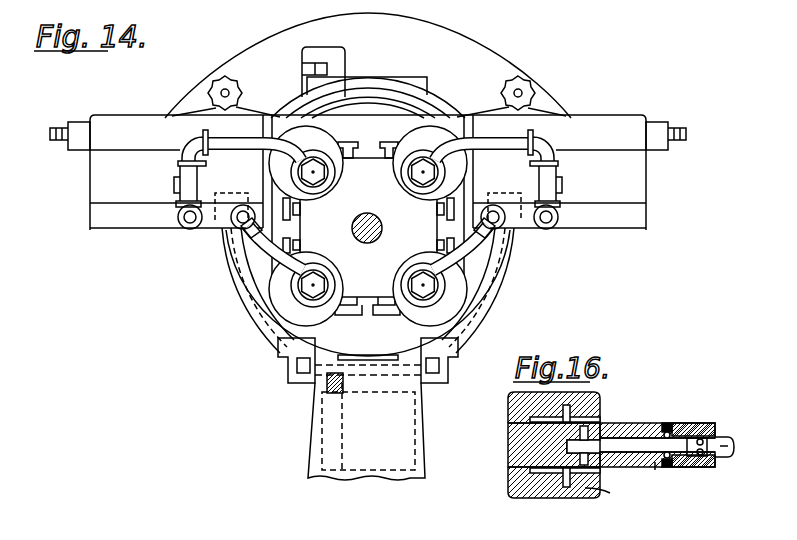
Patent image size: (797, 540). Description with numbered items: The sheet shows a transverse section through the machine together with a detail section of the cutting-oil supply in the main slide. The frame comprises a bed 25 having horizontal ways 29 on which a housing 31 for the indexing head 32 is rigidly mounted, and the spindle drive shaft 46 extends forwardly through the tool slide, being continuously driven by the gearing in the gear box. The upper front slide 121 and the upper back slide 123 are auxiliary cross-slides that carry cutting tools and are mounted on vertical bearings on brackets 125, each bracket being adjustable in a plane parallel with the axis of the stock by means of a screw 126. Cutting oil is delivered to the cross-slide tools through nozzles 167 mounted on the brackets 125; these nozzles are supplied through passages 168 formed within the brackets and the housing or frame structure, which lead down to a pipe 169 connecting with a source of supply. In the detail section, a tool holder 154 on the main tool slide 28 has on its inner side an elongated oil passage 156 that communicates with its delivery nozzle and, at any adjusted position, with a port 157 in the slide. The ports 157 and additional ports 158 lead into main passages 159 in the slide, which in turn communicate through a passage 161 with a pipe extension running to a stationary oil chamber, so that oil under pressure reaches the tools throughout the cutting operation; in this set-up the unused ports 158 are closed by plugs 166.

In FIG. 14, the bed 25 is at (352, 447).
In FIG. 16, the main tool slide 28 is at (645, 423).
In FIG. 14, the horizontal ways 29 is at (298, 366).
In FIG. 14, the housing 31 is at (437, 104).
In FIG. 14, the indexing head 32 is at (372, 117).
In FIG. 14, the spindle drive shaft 46 is at (380, 220).
In FIG. 14, the upper front slide 121 is at (100, 172).
In FIG. 14, the upper back slide 123 is at (636, 178).
In FIG. 14, the brackets 125 is at (124, 130).
In FIG. 14, the screw 126 is at (522, 92).
In FIG. 16, the tool holder 154 is at (510, 398).
In FIG. 16, the oil passage 156 is at (598, 478).
In FIG. 16, the port 157 is at (604, 424).
In FIG. 16, the additional ports 158 is at (690, 430).
In FIG. 16, the main passages 159 is at (655, 465).
In FIG. 16, the passage 161 is at (725, 458).
In FIG. 16, the plugs 166 is at (670, 462).
In FIG. 14, the nozzles 167 is at (273, 141).
In FIG. 14, the passages 168 is at (215, 232).
In FIG. 14, the pipe 169 is at (338, 404).